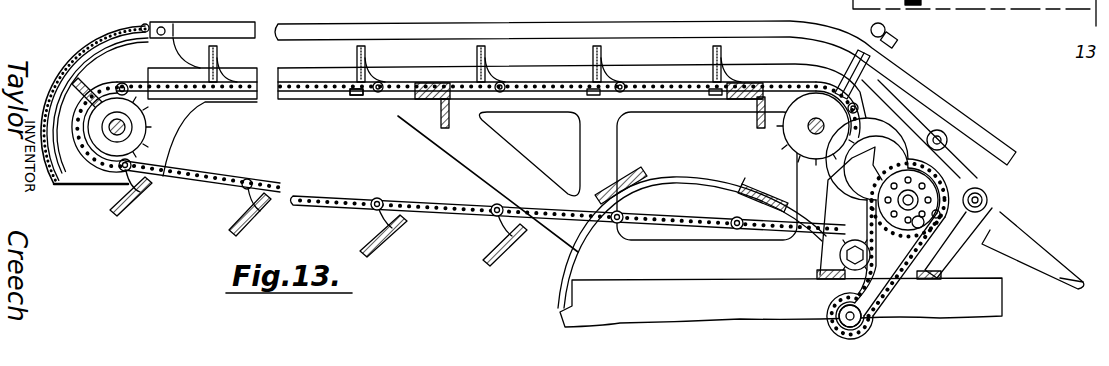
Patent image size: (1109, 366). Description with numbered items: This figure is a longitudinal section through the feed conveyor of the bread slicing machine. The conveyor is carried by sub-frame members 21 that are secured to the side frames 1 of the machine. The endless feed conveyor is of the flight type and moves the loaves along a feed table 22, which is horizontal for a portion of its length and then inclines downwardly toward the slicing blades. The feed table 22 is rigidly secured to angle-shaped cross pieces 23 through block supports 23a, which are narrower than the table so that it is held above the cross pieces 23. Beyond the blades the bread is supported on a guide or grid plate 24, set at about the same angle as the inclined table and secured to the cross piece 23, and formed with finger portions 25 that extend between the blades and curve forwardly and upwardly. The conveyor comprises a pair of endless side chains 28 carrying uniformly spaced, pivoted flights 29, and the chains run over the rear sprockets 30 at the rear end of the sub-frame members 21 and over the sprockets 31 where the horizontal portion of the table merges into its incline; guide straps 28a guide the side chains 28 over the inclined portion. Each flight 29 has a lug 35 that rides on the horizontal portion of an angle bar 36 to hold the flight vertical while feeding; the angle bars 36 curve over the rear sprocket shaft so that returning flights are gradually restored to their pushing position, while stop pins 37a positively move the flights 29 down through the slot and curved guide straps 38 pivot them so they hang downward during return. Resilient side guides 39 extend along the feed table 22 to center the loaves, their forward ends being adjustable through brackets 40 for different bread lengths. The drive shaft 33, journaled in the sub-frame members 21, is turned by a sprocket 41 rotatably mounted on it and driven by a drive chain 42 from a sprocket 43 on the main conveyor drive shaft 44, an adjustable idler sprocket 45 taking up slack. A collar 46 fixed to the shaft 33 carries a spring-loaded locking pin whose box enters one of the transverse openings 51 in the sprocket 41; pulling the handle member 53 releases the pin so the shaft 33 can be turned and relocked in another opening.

The side frame 1 is at (738, 306).
The sub-frame member 21 is at (495, 157).
The feed table 22 is at (530, 82).
The cross piece 23 is at (443, 120).
The block support 23a is at (432, 100).
The guide plate 24 is at (1000, 222).
The finger portion 25 is at (1072, 286).
The side chain 28 is at (186, 188).
The guide strap 28a is at (867, 85).
The flight 29 is at (367, 54).
The sprocket 30 is at (150, 128).
The sprocket 31 is at (790, 137).
The drive shaft 33 is at (905, 200).
The lug 35 is at (355, 100).
The angle bar 36 is at (306, 70).
The stop pin 37a is at (945, 132).
The curved guide strap 38 is at (673, 177).
The side guide 39 is at (510, 23).
The adjustable bracket 40 is at (895, 47).
The sprocket 41 is at (888, 166).
The drive chain 42 is at (882, 297).
The sprocket 43 is at (840, 314).
The main conveyor drive shaft 44 is at (860, 318).
The idler sprocket 45 is at (840, 258).
The collar 46 is at (890, 196).
The transverse opening 51 is at (987, 185).
The handle member 53 is at (928, 10).